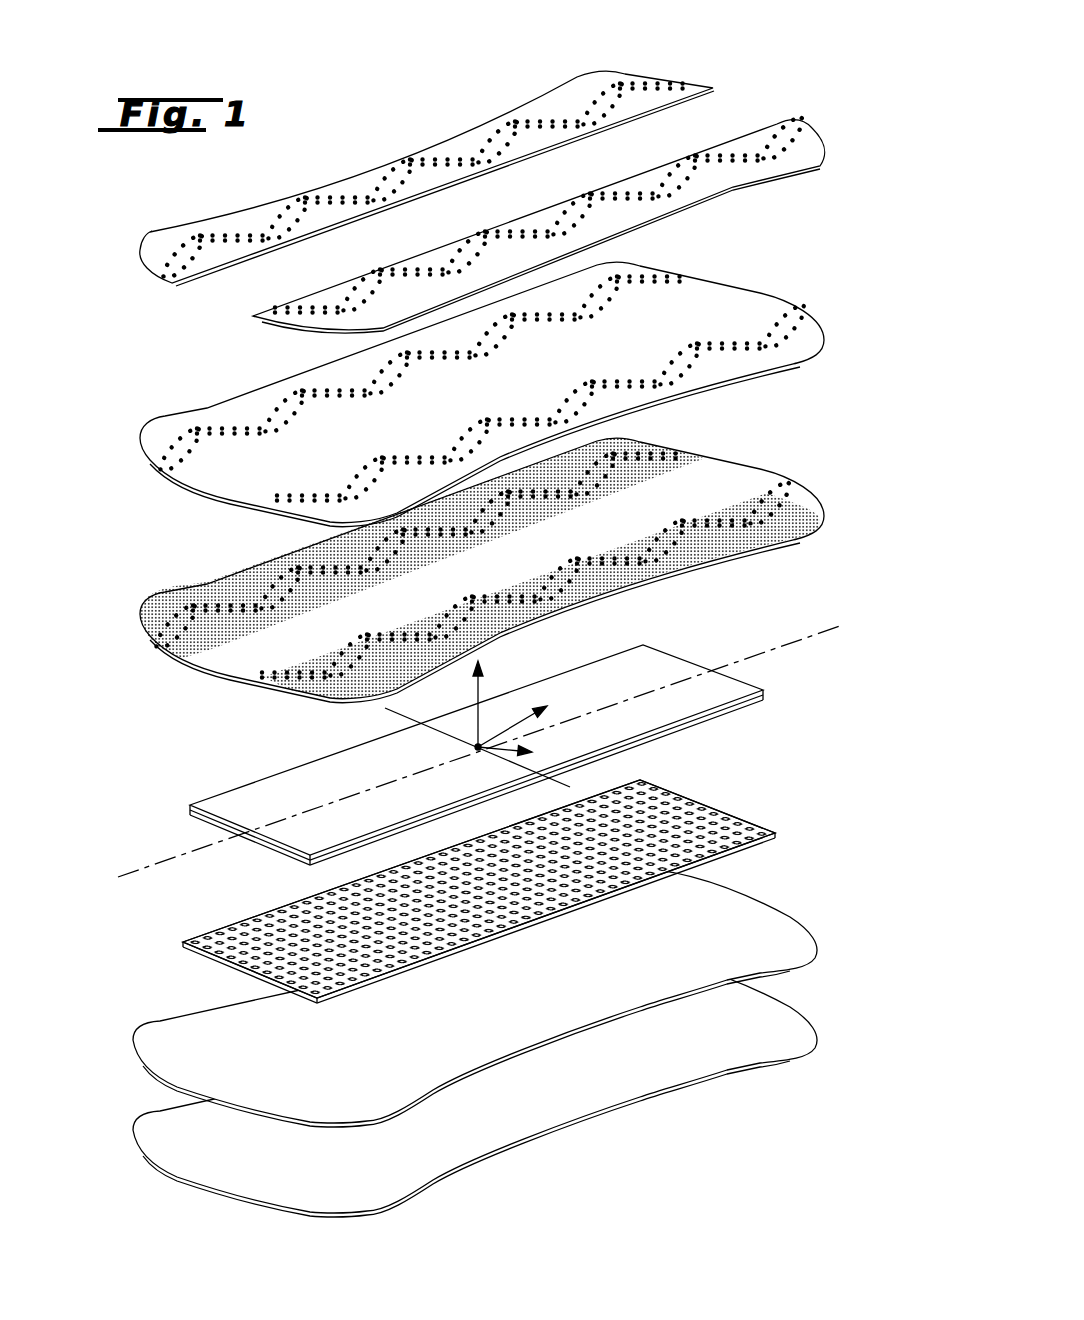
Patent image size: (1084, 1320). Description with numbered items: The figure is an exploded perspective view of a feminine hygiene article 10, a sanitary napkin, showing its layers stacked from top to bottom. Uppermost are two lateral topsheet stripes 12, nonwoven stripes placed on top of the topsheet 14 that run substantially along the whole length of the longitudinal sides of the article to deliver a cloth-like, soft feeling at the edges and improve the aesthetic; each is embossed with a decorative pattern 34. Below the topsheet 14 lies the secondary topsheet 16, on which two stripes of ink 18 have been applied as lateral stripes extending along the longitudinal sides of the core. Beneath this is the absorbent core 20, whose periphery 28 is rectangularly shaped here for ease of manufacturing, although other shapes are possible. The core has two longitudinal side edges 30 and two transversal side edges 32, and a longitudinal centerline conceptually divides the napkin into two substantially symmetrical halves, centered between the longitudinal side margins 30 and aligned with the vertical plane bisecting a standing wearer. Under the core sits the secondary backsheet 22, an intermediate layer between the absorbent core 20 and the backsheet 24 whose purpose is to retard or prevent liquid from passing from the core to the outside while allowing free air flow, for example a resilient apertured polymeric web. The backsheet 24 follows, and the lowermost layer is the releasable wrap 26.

The feminine hygiene article 10 is at (625, 1127).
The lateral topsheet stripes 12 is at (753, 143).
The topsheet 14 is at (740, 313).
The secondary topsheet 16 is at (527, 551).
The stripes of ink 18 is at (802, 513).
The absorbent core 20 is at (473, 757).
The secondary backsheet 22 is at (747, 825).
The backsheet 24 is at (770, 928).
The releasable wrap 26 is at (788, 1028).
The periphery 28 is at (357, 850).
The longitudinal side edges 30 is at (260, 777).
The transversal side edges 32 is at (680, 652).
The decorative pattern 34 is at (500, 137).